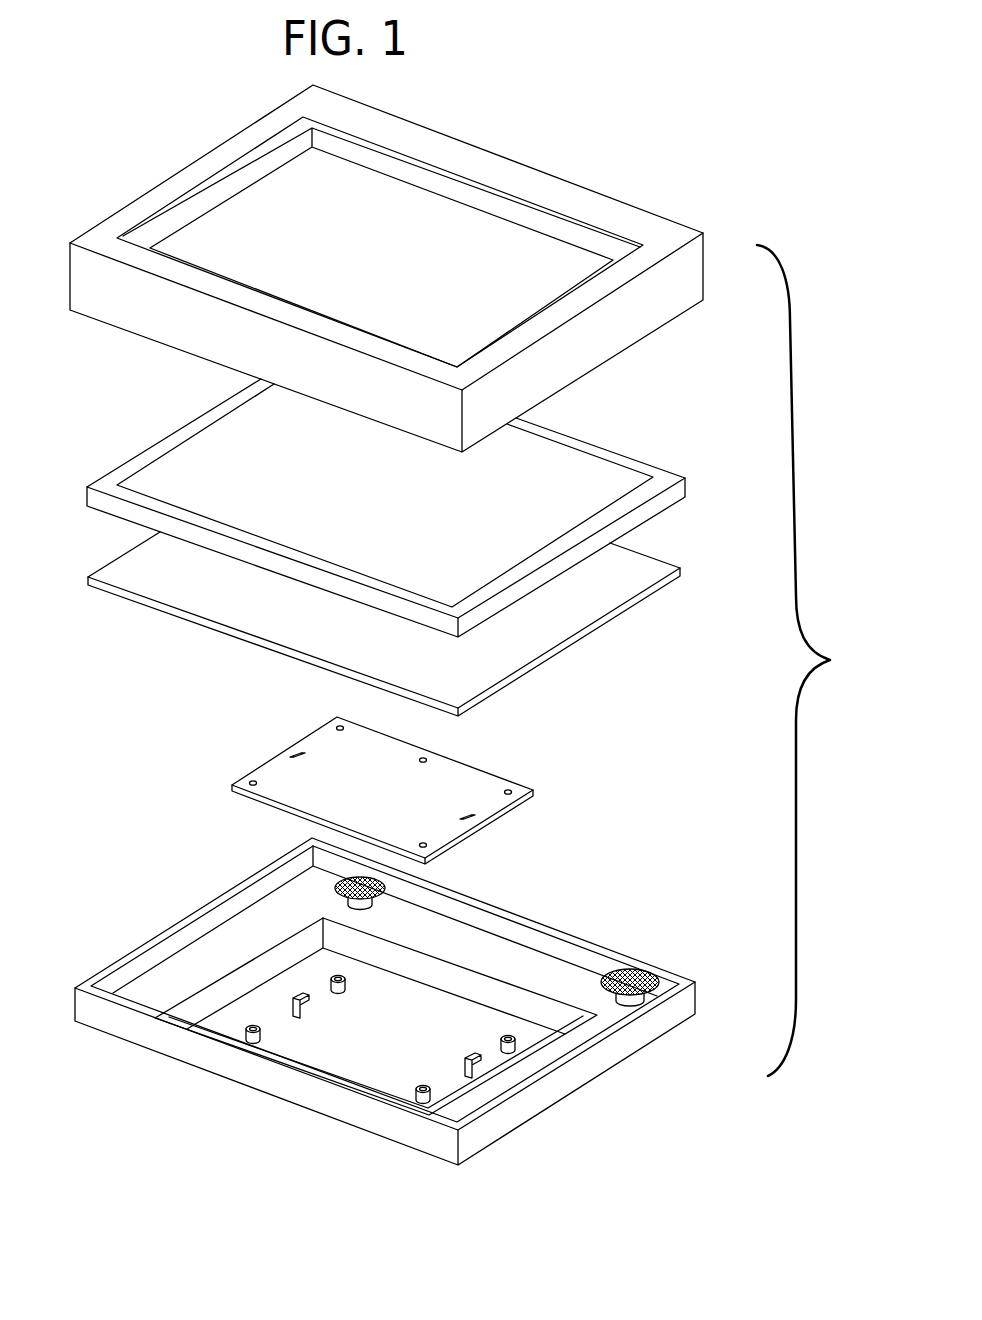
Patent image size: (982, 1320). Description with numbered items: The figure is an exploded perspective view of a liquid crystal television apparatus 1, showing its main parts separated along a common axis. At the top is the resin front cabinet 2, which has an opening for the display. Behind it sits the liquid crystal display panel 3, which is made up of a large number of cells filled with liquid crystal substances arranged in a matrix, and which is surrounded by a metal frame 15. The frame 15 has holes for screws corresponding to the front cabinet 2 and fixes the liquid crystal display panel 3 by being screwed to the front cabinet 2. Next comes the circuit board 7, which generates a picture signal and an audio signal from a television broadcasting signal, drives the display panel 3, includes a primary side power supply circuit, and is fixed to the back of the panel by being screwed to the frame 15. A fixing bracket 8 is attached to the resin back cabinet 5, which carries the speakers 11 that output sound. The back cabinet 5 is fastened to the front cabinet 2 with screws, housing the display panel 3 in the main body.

The liquid crystal television apparatus 1 is at (815, 660).
The front cabinet 2 is at (548, 185).
The liquid crystal display panel 3 is at (630, 507).
The metal frame 15 is at (602, 452).
The circuit board 7 is at (580, 623).
The fixing bracket 8 is at (490, 772).
The back cabinet 5 is at (522, 917).
The speakers 11 is at (622, 965).